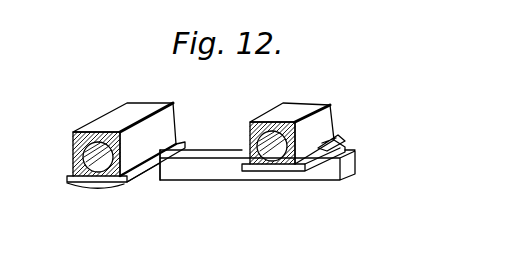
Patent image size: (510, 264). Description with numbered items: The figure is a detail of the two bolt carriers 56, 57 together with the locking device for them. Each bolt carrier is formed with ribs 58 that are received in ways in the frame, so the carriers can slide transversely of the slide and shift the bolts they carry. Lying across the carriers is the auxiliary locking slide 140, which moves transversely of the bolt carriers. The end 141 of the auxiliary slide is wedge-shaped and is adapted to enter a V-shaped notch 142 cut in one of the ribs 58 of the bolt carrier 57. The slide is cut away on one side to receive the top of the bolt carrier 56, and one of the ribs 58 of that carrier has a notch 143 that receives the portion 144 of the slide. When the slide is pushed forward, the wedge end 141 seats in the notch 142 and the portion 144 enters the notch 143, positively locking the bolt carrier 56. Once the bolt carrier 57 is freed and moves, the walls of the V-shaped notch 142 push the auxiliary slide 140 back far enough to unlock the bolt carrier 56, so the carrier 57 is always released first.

The bolt carrier 56 is at (300, 106).
The bolt carrier 57 is at (125, 108).
The ribs 58 is at (127, 183).
The auxiliary locking slide 140 is at (232, 172).
The wedge-shaped end 141 is at (162, 152).
The V-shaped notch 142 is at (160, 157).
The notch 143 is at (333, 134).
The portion of the slide 144 is at (348, 150).